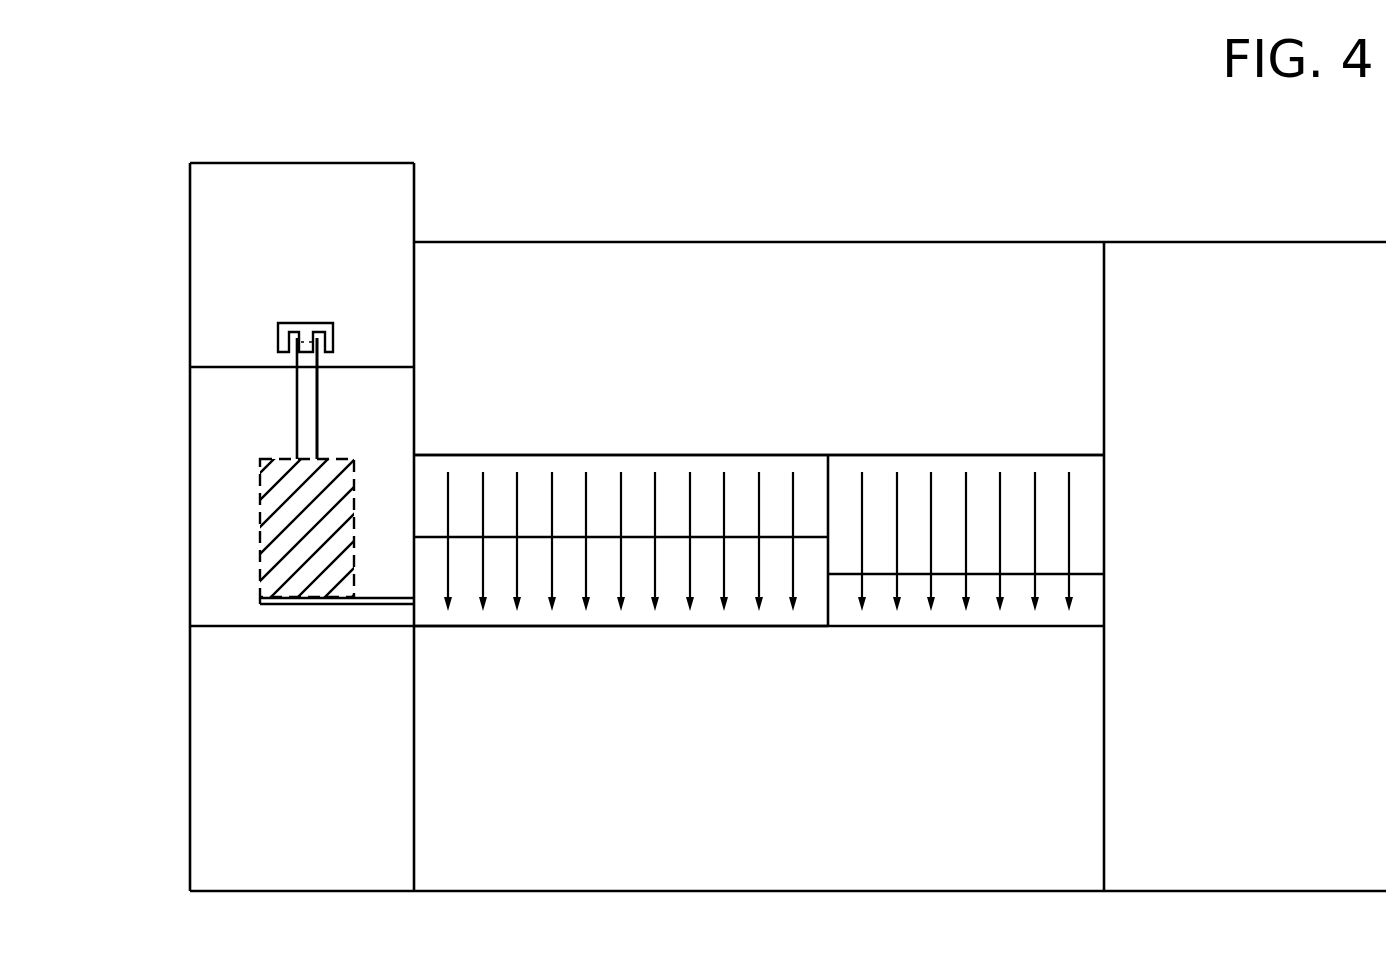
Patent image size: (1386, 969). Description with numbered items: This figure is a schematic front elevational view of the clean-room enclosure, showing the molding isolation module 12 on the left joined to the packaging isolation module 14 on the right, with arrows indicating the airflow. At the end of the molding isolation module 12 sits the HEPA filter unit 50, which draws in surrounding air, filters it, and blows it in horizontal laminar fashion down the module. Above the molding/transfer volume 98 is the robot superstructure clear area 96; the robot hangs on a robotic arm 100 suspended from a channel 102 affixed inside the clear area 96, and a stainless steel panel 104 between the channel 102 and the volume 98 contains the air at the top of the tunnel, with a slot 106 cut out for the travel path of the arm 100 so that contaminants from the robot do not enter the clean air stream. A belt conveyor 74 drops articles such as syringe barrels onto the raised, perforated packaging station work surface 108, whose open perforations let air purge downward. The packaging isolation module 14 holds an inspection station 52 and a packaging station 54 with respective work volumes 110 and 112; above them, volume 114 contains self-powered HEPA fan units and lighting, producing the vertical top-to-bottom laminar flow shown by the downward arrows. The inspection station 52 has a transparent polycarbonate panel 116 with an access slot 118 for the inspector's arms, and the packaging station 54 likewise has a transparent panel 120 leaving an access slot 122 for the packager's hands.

The molding isolation module 12 is at (178, 434).
The packaging isolation module 14 is at (792, 172).
The HEPA filter unit 50 is at (245, 797).
The inspection station 52 is at (772, 626).
The packaging station 54 is at (863, 627).
The belt conveyor 74 is at (367, 607).
The robot superstructure clear area 96 is at (252, 215).
The molding/transfer volume 98 is at (230, 573).
The robotic arm 100 is at (300, 404).
The channel 102 is at (318, 322).
The stainless steel panel 104 is at (233, 367).
The slot 106 is at (318, 358).
The packaging station work surface 108 is at (536, 628).
The inspection work volume 110 is at (740, 455).
The packaging work volume 112 is at (915, 455).
The HEPA fan unit volume 114 is at (750, 280).
The transparent panel 116 is at (538, 487).
The access slot 118 is at (707, 598).
The transparent panel 120 is at (1016, 485).
The access slot 122 is at (985, 598).